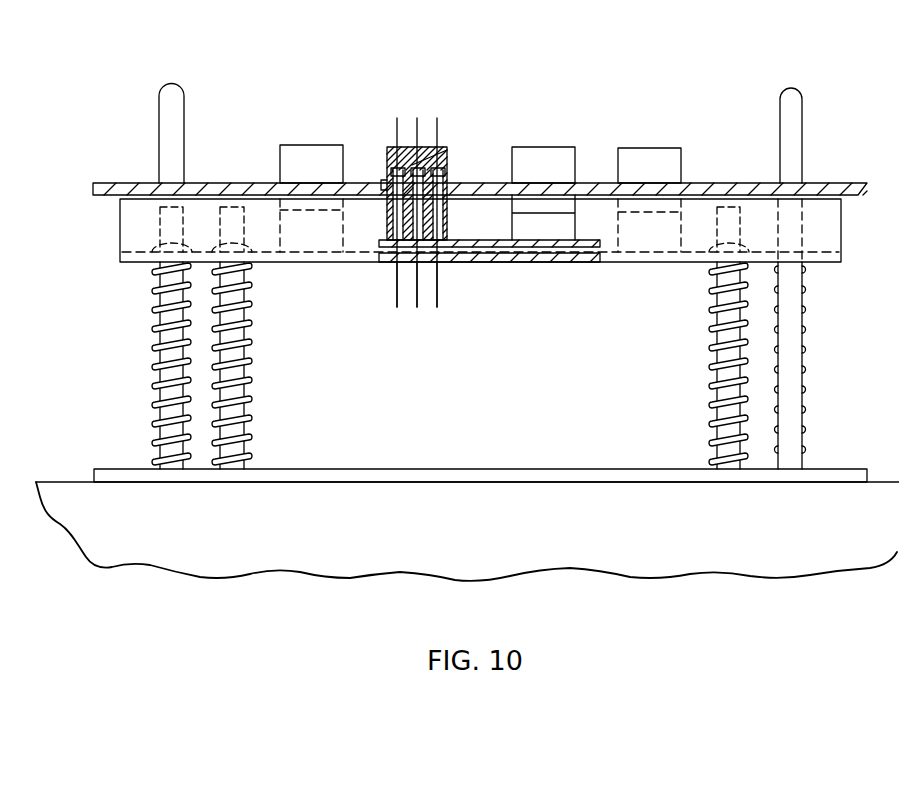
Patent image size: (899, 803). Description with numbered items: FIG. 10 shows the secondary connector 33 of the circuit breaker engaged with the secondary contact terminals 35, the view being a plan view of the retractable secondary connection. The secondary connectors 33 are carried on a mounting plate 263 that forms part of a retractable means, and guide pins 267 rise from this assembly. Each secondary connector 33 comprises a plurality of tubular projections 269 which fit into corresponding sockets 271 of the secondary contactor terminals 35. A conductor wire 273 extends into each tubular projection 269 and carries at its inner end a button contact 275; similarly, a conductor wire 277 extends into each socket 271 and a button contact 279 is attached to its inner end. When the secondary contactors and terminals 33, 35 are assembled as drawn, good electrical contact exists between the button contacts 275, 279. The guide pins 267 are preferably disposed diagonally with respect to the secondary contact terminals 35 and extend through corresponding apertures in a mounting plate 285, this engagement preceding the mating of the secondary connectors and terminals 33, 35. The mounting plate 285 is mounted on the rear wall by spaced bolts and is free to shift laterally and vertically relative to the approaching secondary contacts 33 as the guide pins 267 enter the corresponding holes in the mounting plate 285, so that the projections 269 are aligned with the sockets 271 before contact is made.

The secondary connector 33 is at (298, 237).
The secondary contact terminal 35 is at (319, 175).
The mounting plate 263 is at (502, 262).
The guide pin 267 is at (177, 121).
The tubular projection 269 is at (447, 208).
The socket 271 is at (448, 178).
The conductor wire 273 is at (437, 300).
The button contact 275 is at (388, 182).
The conductor wire 277 is at (437, 118).
The button contact 279 is at (448, 152).
The mounting plate 285 is at (703, 185).